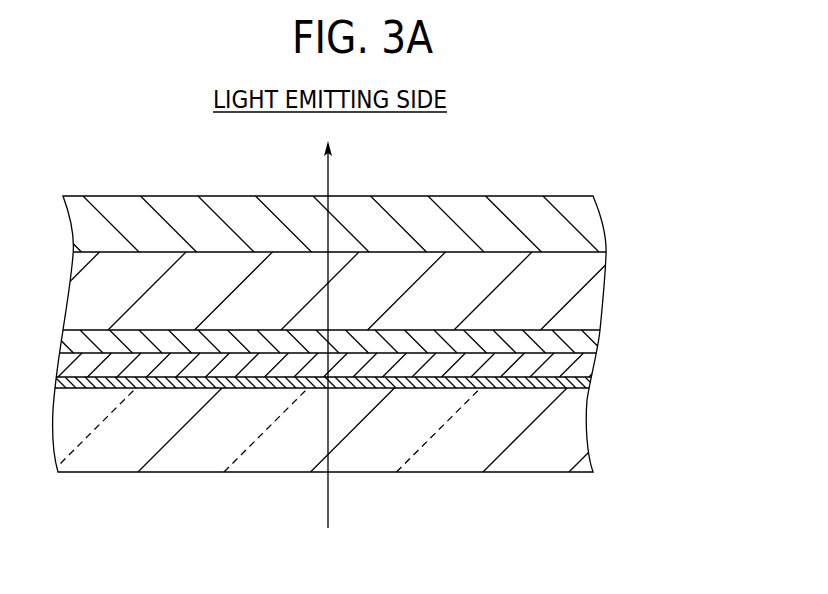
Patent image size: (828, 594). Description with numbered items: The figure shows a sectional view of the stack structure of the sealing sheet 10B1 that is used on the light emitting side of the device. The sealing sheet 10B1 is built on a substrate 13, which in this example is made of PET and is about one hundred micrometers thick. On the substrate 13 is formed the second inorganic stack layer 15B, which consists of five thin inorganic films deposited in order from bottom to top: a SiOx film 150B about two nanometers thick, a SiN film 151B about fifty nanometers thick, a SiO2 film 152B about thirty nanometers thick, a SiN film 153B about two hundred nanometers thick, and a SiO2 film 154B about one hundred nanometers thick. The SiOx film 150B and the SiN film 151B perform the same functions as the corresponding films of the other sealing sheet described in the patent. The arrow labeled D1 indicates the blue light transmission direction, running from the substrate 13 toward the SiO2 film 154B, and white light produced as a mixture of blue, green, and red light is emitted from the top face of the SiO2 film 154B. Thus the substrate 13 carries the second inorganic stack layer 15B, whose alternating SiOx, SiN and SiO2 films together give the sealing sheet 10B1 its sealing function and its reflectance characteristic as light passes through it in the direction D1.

The sealing sheet 10B1 is at (389, 295).
The second inorganic stack layer 15B is at (389, 296).
The SiO2 film 154B is at (592, 232).
The SiN film 153B is at (592, 293).
The SiO2 film 152B is at (583, 337).
The SiN film 151B is at (583, 358).
The SiOx film 150B is at (363, 385).
The substrate 13 is at (580, 423).
The blue light transmission direction D1 is at (328, 513).